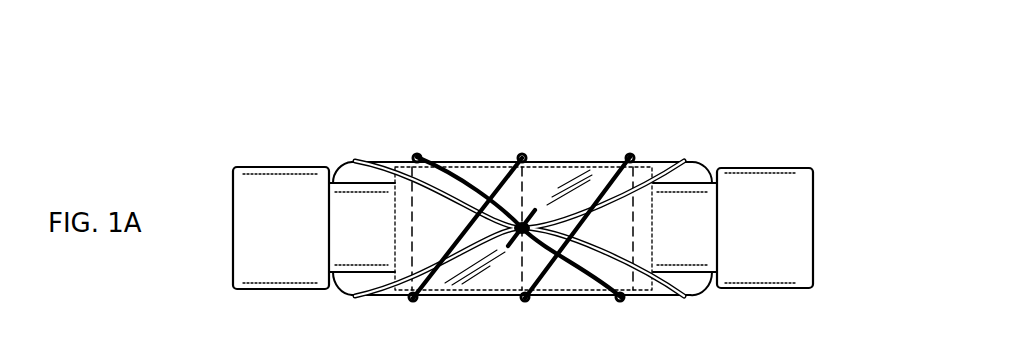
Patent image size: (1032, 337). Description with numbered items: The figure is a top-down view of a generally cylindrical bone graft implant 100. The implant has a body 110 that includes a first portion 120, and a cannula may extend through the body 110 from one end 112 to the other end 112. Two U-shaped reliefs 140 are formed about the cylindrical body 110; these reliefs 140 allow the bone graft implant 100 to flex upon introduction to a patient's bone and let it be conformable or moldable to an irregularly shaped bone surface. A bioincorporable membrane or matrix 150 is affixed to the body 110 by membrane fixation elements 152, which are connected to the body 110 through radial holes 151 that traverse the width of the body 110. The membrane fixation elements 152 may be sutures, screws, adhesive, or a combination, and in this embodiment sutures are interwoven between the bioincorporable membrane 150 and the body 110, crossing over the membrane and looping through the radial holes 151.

The bone graft implant 100 is at (837, 46).
The body 110 is at (815, 186).
The end 112 is at (232, 257).
The first portion 120 is at (780, 168).
The U-shaped relief 140 is at (342, 170).
The bioincorporable membrane 150 is at (578, 160).
The radial hole 151 is at (405, 162).
The membrane fixation element 152 is at (462, 163).